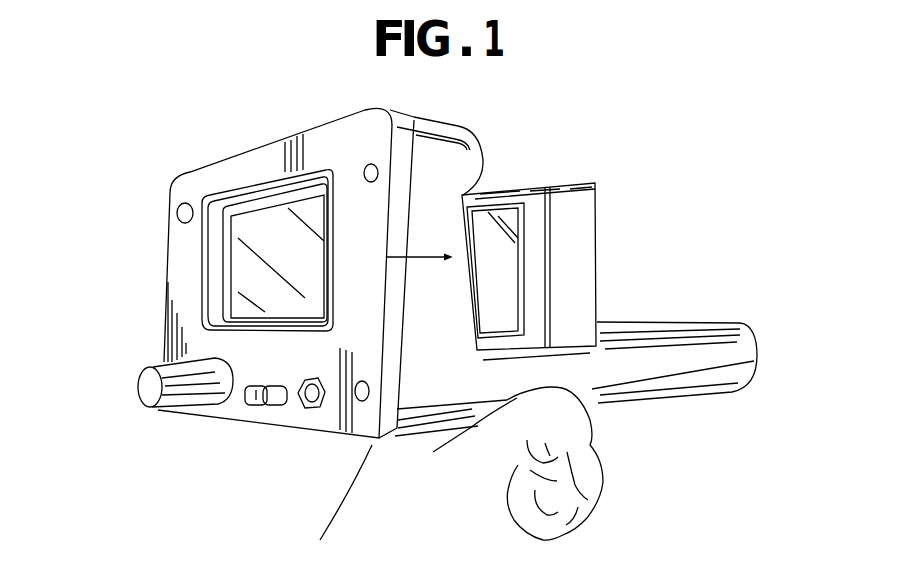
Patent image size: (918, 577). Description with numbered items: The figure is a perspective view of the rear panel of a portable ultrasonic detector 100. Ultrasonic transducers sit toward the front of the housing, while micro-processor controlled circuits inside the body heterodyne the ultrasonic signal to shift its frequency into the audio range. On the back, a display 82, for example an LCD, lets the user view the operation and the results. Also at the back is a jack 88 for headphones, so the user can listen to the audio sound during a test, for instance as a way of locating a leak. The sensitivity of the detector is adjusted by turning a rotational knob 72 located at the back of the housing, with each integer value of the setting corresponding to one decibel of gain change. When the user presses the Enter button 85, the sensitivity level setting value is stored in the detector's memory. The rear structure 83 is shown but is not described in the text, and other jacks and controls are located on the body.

The portable ultrasonic detector 100 is at (306, 124).
The display 82 is at (237, 242).
The rear sight frame 83 is at (591, 233).
The rotational knob 72 is at (150, 391).
The Enter button 85 is at (273, 405).
The jack 88 is at (317, 410).